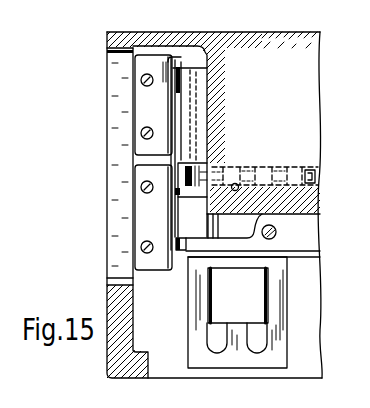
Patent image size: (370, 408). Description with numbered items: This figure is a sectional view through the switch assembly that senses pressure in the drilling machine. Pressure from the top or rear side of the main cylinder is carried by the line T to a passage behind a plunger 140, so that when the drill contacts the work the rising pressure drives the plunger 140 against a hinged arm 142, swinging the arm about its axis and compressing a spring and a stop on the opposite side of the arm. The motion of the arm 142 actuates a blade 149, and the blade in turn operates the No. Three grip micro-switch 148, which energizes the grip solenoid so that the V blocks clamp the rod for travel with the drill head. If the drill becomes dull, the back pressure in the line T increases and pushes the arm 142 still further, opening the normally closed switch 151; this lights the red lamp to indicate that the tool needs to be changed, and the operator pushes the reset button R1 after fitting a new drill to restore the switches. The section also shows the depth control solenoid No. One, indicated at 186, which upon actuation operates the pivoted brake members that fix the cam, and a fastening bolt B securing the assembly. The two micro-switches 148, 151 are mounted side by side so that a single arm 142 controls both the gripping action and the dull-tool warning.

The micro-switch 148 is at (138, 88).
The normally closed switch 151 is at (135, 176).
The blade 149 is at (186, 110).
The hinged arm 142 is at (198, 197).
The plunger 140 is at (267, 167).
The line from top of main cylinder T is at (312, 167).
The bolt B is at (232, 190).
The reset button R1 is at (180, 252).
The depth control solenoid No. 1 186 is at (282, 341).